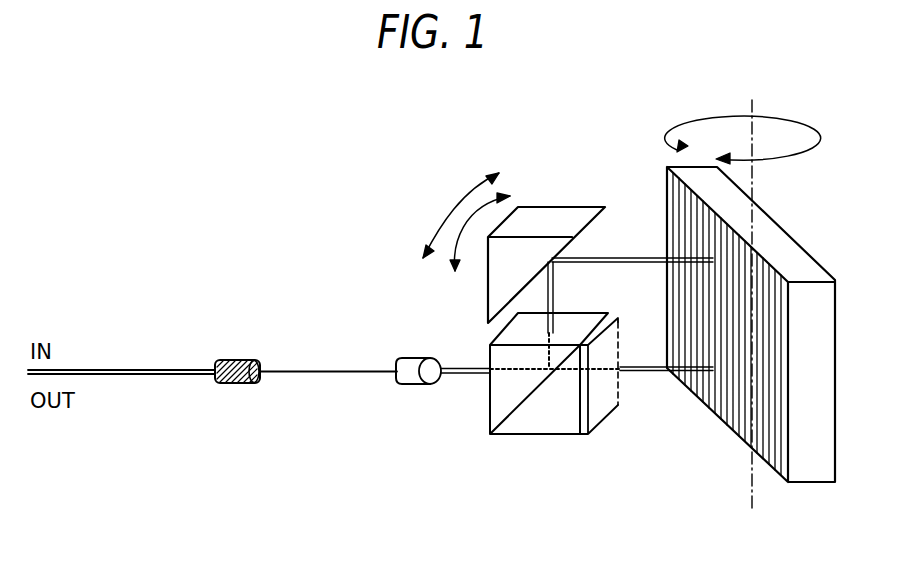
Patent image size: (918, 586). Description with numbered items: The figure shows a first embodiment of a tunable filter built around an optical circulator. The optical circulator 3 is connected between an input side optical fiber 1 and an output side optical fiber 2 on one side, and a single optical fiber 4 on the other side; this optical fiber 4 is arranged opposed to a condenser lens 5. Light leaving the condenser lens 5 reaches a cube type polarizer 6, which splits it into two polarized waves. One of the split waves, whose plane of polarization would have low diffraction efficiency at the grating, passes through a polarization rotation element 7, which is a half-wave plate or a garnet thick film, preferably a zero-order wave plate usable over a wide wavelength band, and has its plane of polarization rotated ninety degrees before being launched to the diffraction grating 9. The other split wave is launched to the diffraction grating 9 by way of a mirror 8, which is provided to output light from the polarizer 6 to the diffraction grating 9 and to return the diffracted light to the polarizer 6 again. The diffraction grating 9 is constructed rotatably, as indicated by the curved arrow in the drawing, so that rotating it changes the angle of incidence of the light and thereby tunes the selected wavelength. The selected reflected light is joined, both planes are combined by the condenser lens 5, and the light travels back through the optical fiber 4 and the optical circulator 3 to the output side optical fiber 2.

The input side optical fiber 1 is at (135, 370).
The output side optical fiber 2 is at (162, 376).
The optical circulator 3 is at (238, 362).
The optical fiber 4 is at (320, 372).
The condenser lens 5 is at (420, 360).
The cube type polarizer 6 is at (490, 420).
The polarization rotation element 7 is at (610, 412).
The mirror 8 is at (566, 208).
The diffraction grating 9 is at (790, 238).